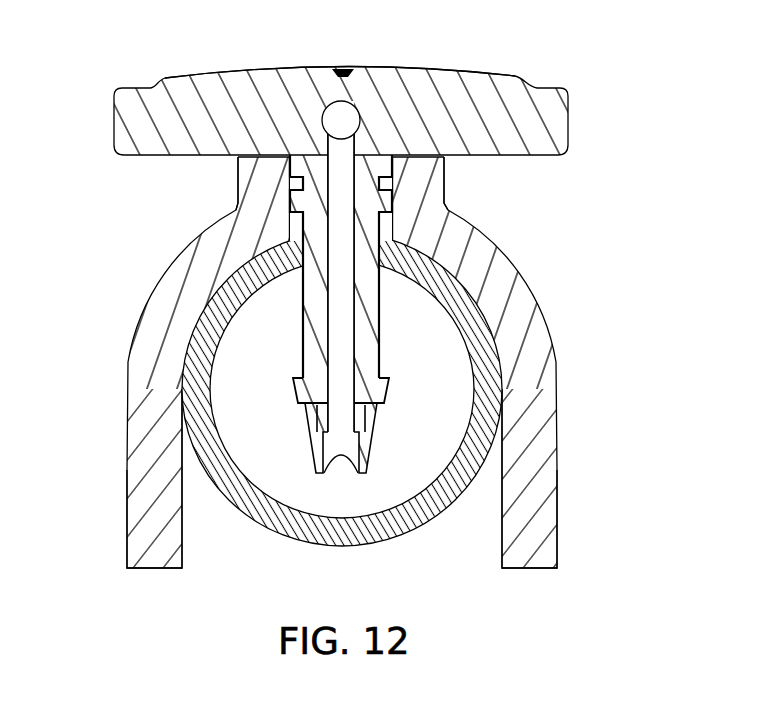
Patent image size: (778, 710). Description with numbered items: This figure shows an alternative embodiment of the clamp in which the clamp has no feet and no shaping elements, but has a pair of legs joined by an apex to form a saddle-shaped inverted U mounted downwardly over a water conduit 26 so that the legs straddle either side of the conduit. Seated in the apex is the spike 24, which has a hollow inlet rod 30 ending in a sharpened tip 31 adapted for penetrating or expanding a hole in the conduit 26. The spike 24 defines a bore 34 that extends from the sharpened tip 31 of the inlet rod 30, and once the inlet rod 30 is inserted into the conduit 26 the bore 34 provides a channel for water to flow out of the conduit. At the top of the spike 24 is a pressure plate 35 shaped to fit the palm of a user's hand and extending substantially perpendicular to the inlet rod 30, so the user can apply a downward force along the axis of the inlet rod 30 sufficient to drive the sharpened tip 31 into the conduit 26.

The spike 24 is at (504, 92).
The water conduit 26 is at (332, 534).
The hollow inlet rod 30 is at (364, 326).
The sharpened tip 31 is at (366, 469).
The bore 34 is at (329, 350).
The pressure plate 35 is at (387, 86).